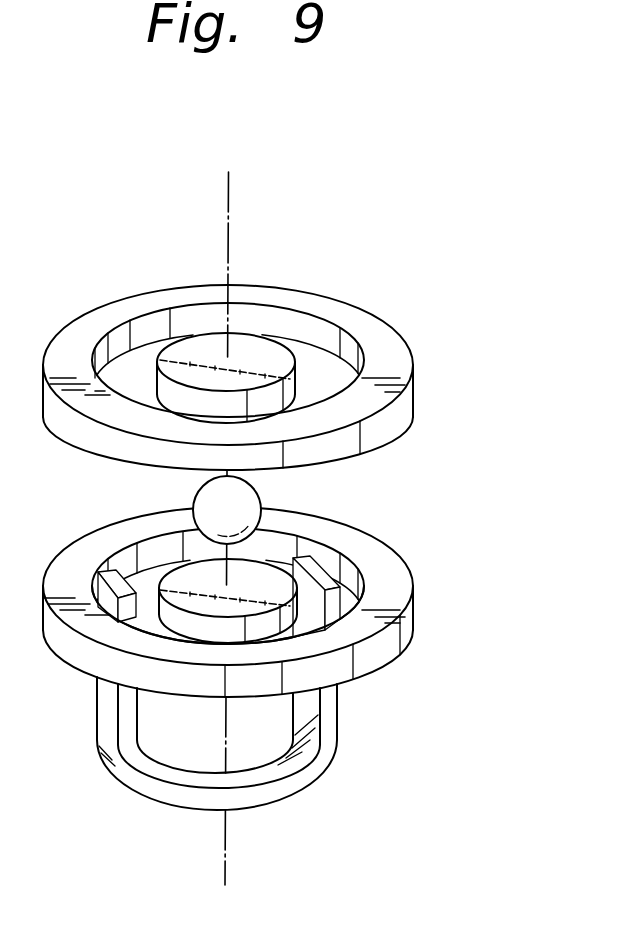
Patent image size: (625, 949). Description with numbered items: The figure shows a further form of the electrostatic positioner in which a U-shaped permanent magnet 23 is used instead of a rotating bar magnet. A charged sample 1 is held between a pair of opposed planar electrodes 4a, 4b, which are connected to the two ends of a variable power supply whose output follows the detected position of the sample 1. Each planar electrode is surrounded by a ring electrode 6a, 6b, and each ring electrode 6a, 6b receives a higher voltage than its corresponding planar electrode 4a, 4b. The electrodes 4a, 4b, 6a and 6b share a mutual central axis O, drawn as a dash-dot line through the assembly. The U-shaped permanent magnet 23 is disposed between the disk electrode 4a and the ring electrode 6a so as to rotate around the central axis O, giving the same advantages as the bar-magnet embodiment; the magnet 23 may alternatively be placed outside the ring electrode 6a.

The central axis O is at (231, 220).
The charged sample 1 is at (194, 501).
The planar electrode 4a is at (264, 579).
The planar electrode 4b is at (257, 352).
The ring electrode 6a is at (393, 583).
The ring electrode 6b is at (396, 358).
The U-shaped permanent magnet 23 is at (327, 746).